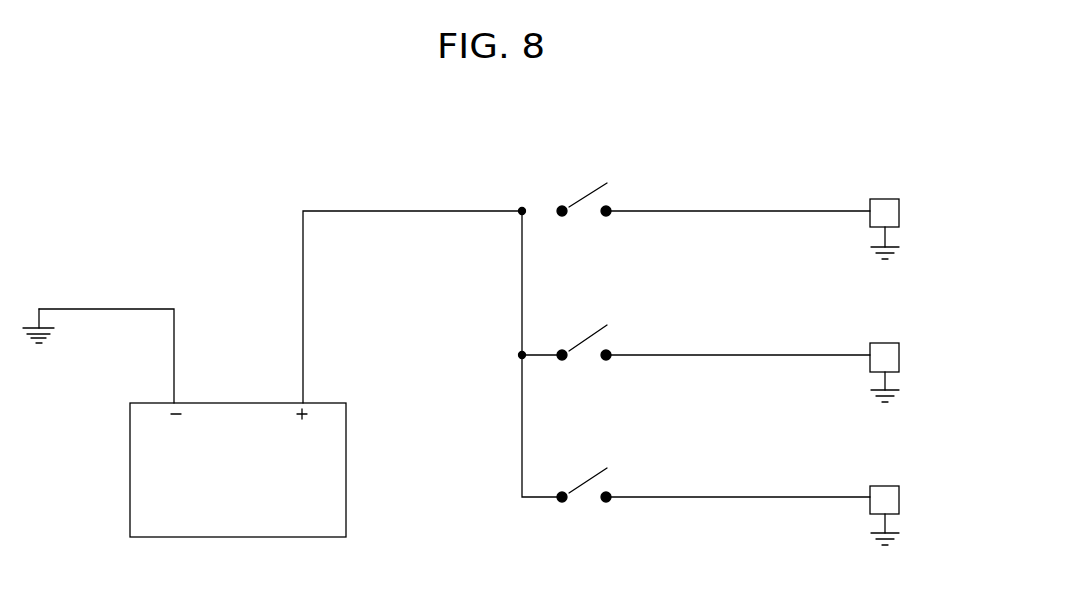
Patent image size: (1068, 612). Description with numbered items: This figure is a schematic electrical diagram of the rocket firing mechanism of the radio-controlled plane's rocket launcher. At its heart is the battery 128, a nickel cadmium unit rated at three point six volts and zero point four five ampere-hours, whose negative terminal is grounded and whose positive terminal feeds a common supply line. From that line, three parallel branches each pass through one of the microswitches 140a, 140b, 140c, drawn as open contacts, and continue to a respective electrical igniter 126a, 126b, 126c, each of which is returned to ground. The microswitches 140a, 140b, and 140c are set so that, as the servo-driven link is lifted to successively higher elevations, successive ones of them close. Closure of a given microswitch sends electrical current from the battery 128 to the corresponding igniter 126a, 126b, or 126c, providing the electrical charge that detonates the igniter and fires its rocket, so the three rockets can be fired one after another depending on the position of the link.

The battery 128 is at (234, 527).
The microswitch 140a is at (508, 233).
The microswitch 140b is at (512, 362).
The microswitch 140c is at (503, 497).
The electrical igniter 126a is at (913, 228).
The electrical igniter 126b is at (912, 367).
The electrical igniter 126c is at (908, 500).